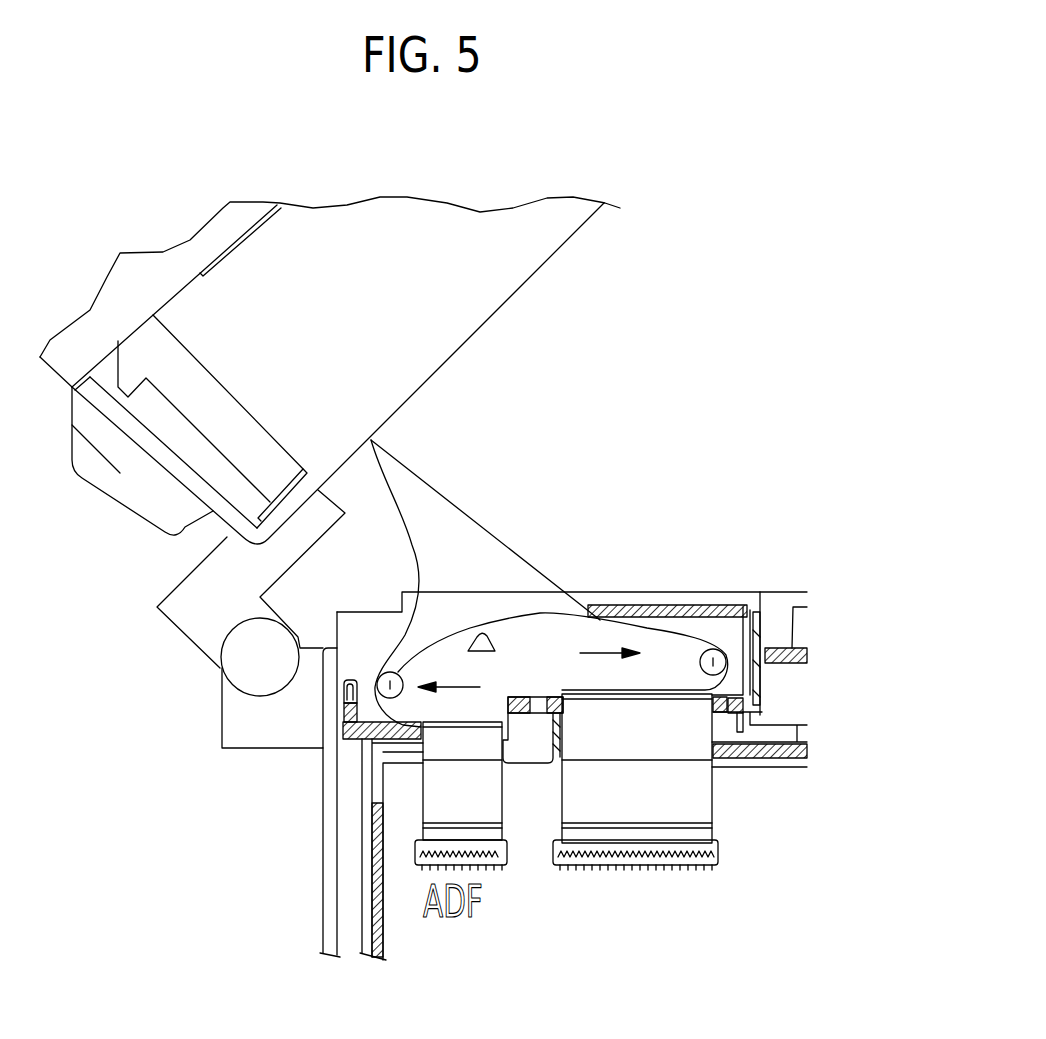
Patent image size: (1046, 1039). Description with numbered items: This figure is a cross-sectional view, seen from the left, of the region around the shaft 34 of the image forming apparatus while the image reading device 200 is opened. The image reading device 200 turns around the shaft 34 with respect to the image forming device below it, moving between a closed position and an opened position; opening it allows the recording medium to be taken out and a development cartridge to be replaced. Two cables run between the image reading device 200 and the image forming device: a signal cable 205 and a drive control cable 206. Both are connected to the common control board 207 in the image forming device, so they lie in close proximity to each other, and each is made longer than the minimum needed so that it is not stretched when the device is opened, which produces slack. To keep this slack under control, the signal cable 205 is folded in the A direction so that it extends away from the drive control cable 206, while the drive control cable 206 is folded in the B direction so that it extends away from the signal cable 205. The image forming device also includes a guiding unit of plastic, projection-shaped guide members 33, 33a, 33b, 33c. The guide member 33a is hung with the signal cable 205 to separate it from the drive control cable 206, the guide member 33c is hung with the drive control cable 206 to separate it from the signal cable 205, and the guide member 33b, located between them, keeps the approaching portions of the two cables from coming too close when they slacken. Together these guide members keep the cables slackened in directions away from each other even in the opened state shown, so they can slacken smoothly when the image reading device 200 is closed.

The image reading device 200 is at (226, 272).
The signal cable 205 is at (463, 530).
The drive control cable 206 is at (393, 527).
The control board 207 is at (612, 922).
The guide member 33 is at (661, 531).
The guide member 33a is at (715, 660).
The guide member 33b is at (395, 673).
The guide member 33c is at (484, 632).
The shaft 34 is at (237, 662).